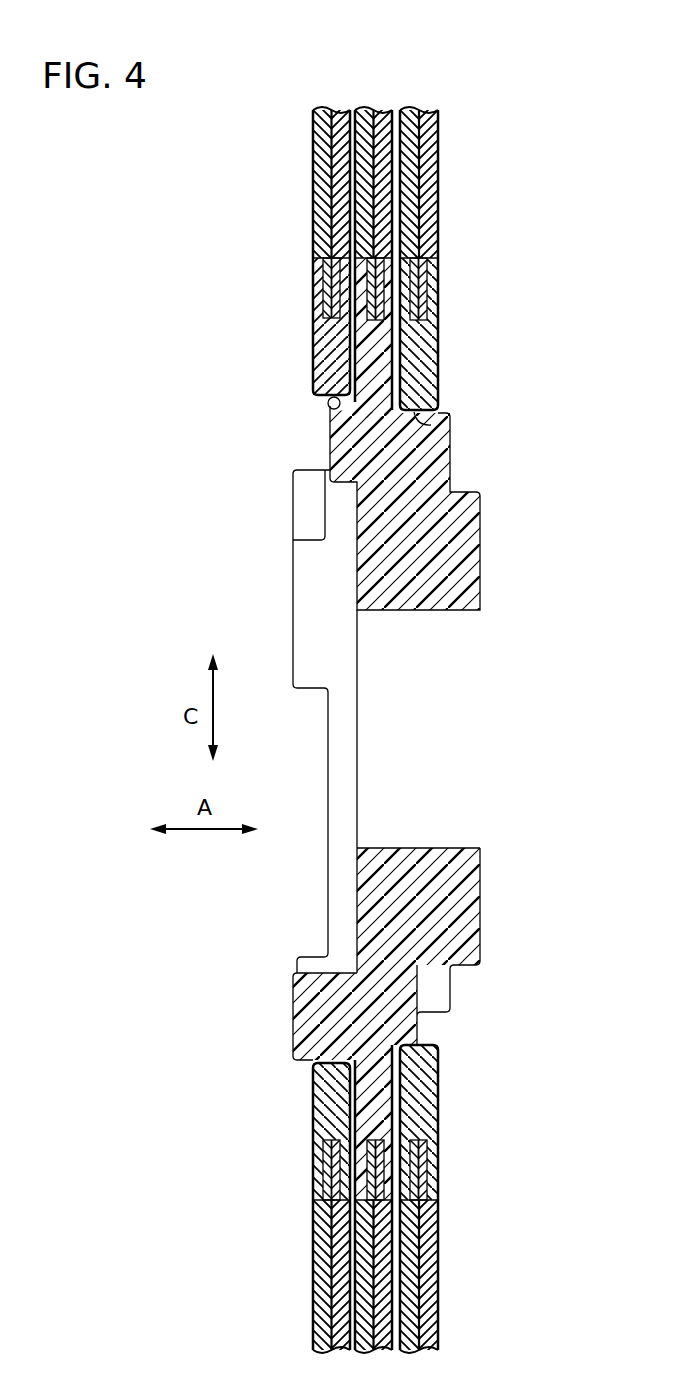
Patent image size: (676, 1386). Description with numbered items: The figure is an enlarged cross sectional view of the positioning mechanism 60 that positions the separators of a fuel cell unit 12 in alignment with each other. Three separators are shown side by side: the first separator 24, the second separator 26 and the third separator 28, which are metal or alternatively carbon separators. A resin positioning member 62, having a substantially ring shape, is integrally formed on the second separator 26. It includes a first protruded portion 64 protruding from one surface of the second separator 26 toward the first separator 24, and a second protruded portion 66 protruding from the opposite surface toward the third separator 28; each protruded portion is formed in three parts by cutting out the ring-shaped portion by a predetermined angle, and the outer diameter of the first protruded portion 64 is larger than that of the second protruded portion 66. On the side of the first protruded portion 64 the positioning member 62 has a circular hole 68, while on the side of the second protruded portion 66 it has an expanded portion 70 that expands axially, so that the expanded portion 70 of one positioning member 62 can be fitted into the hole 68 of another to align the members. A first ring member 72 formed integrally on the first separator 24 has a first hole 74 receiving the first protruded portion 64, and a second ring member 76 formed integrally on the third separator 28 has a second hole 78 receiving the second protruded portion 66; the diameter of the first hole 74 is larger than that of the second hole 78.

The fuel cell unit 12 is at (450, 43).
The first separator 24 is at (336, 107).
The second separator 26 is at (378, 107).
The third separator 28 is at (420, 107).
The positioning mechanism 60 is at (572, 273).
The positioning member 62 is at (484, 533).
The first protruded portion 64 is at (293, 1018).
The second protruded portion 66 is at (427, 452).
The hole 68 is at (352, 920).
The expanded portion 70 is at (482, 890).
The first ring member 72 is at (313, 1082).
The first hole 74 is at (329, 406).
The second ring member 76 is at (439, 1080).
The second hole 78 is at (429, 425).